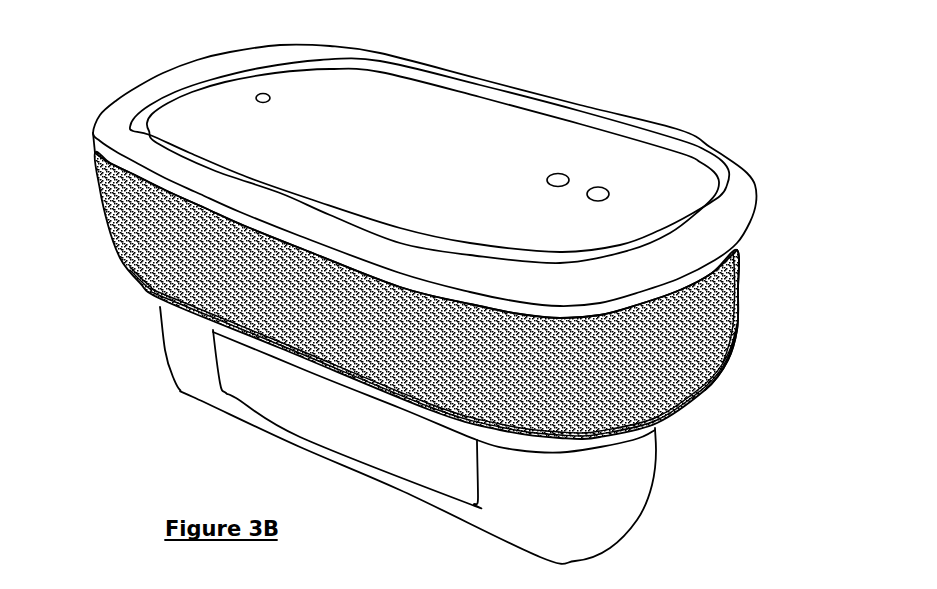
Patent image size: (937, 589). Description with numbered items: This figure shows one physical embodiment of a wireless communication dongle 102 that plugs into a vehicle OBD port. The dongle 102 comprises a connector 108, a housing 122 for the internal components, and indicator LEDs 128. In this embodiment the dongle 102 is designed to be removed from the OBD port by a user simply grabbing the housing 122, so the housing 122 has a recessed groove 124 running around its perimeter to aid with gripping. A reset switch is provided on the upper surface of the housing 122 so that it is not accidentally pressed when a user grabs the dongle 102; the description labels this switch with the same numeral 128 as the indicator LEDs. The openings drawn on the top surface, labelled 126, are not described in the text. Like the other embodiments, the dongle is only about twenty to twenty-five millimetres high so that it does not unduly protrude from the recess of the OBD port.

The dongle 102 is at (168, 416).
The connector 108 is at (634, 508).
The housing 122 is at (143, 292).
The recessed groove 124 is at (736, 283).
The openings 126 is at (560, 172).
The indicator LEDs 128 is at (262, 93).